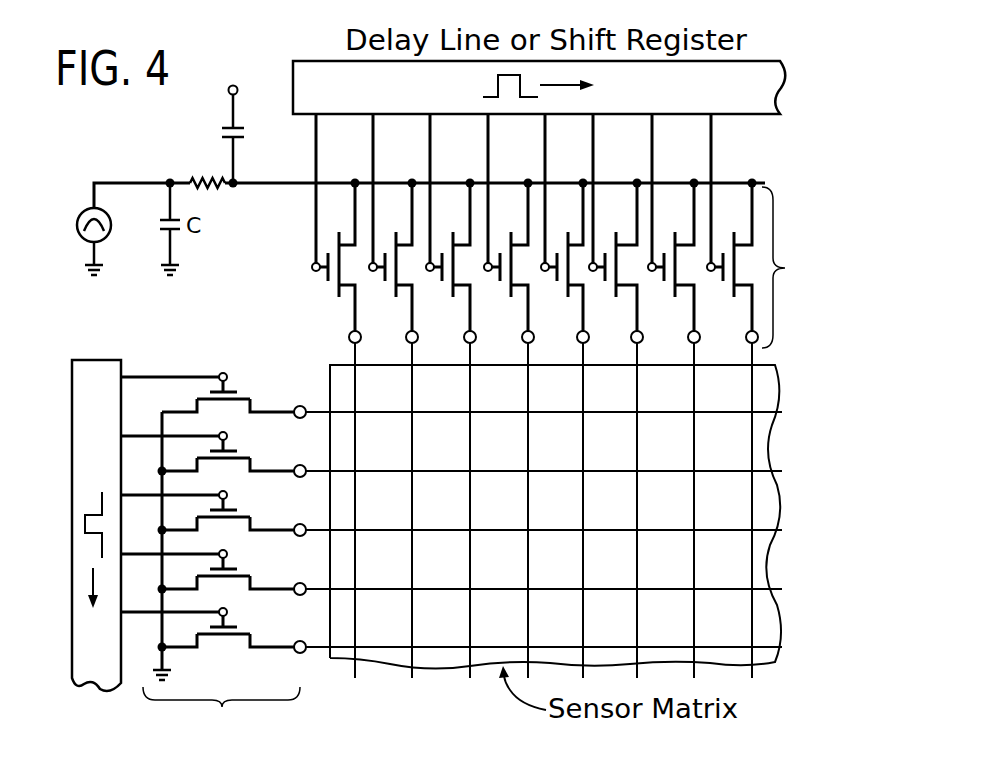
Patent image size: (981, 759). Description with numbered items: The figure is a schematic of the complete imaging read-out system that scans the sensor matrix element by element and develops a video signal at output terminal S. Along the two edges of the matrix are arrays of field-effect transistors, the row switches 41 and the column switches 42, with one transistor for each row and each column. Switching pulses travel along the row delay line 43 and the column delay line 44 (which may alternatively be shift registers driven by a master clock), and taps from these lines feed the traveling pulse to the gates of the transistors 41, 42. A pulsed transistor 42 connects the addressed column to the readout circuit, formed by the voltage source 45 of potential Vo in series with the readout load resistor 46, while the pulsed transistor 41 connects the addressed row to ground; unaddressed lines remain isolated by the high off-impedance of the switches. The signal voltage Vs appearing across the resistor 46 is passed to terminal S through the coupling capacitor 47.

The field-effect transistor switch (row) 41 is at (258, 390).
The field-effect transistor switch (column) 42 is at (610, 204).
The delay line (row) 43 is at (76, 511).
The delay line (column) 44 is at (539, 87).
The source of electrical potential 45 is at (74, 204).
The readout load resistor 46 is at (203, 176).
The coupling capacitor 47 is at (228, 130).